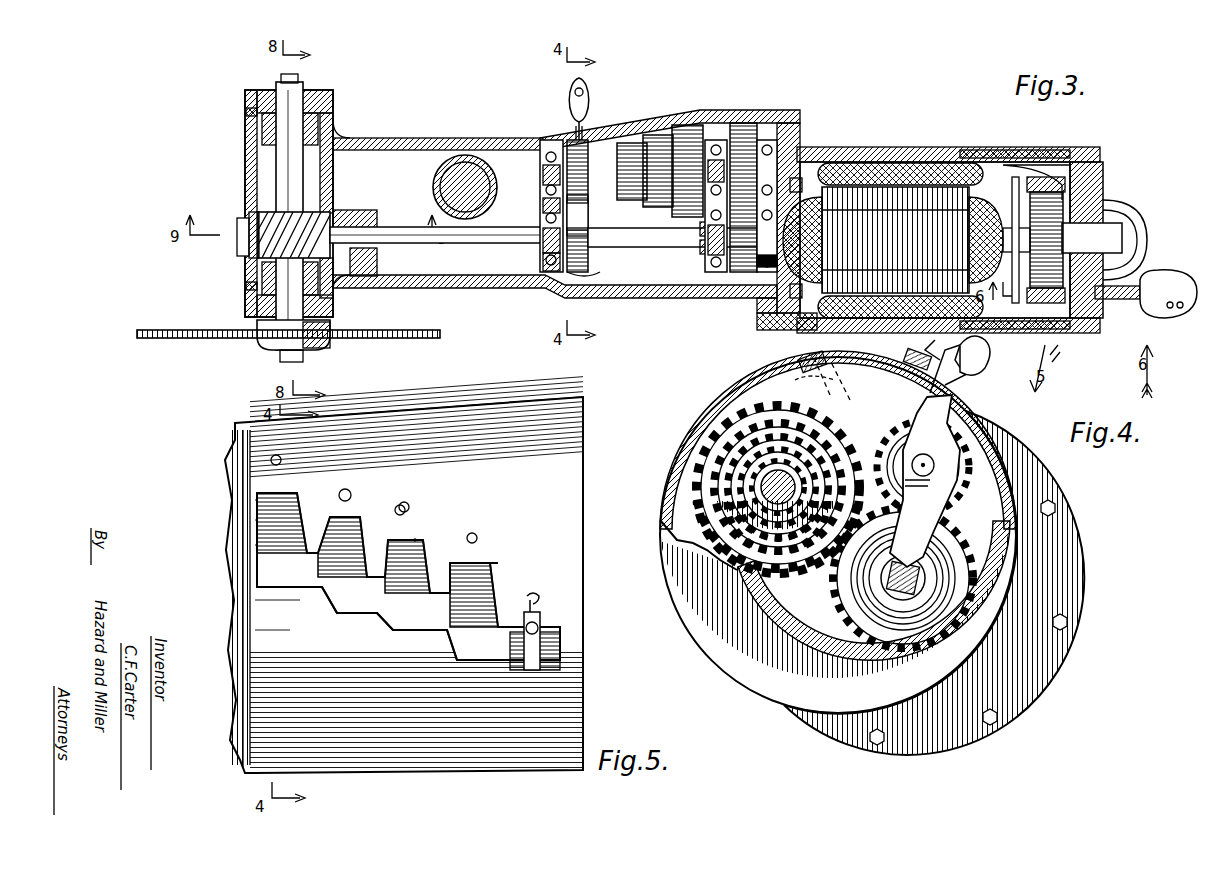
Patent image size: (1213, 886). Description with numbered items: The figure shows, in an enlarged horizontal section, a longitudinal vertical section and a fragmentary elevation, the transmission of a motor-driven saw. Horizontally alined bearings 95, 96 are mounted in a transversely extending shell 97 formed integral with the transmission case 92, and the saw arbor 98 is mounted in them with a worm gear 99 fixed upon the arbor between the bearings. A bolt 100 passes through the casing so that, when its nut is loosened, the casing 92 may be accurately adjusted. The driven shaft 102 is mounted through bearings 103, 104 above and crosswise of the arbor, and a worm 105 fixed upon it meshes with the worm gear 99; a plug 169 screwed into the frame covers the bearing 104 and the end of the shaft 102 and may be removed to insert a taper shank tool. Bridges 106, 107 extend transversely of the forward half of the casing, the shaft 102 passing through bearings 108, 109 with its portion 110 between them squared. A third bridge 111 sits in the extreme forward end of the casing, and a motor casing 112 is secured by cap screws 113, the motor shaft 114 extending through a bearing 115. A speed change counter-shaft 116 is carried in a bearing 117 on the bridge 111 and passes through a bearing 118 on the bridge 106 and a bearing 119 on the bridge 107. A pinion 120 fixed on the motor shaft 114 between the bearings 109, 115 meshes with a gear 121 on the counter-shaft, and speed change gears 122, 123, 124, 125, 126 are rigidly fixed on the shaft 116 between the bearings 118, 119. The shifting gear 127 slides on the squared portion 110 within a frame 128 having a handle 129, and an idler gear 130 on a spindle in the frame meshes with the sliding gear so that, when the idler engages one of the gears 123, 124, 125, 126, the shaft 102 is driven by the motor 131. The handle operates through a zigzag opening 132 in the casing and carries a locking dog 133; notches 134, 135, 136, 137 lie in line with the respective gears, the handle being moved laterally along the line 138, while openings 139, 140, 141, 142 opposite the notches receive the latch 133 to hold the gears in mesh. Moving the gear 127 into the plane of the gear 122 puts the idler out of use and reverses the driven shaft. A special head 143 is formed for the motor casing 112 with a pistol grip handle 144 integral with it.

In FIG. 3, the transmission case 92 is at (450, 140).
In FIG. 4, the transmission case 92 is at (1010, 420).
In FIG. 3, the bearing 95 is at (305, 95).
In FIG. 3, the bearing 96 is at (333, 310).
In FIG. 3, the shell 97 is at (246, 178).
In FIG. 3, the saw arbor 98 is at (278, 290).
In FIG. 3, the worm gear 99 is at (300, 215).
In FIG. 3, the bolt 100 is at (493, 178).
In FIG. 3, the driven shaft 102 is at (490, 225).
In FIG. 3, the bearing 103 is at (377, 219).
In FIG. 3, the bearing 104 is at (241, 218).
In FIG. 3, the worm 105 is at (343, 200).
In FIG. 3, the bridge 106 is at (700, 250).
In FIG. 3, the bridge 107 is at (585, 276).
In FIG. 3, the bearing 108 is at (545, 263).
In FIG. 3, the bearing 109 is at (700, 230).
In FIG. 3, the squared portion 110 is at (660, 228).
In FIG. 4, the squared portion 110 is at (910, 570).
In FIG. 3, the third bridge 111 is at (765, 275).
In FIG. 3, the motor casing 112 is at (878, 145).
In FIG. 4, the motor casing 112 is at (1070, 595).
In FIG. 3, the cap screws 113 is at (818, 118).
In FIG. 4, the cap screws 113 is at (790, 372).
In FIG. 3, the motor shaft 114 is at (1095, 235).
In FIG. 3, the bearing 115 is at (802, 290).
In FIG. 3, the speed change counter-shaft 116 is at (800, 168).
In FIG. 4, the speed change counter-shaft 116 is at (772, 490).
In FIG. 3, the bearing 117 is at (802, 185).
In FIG. 3, the bearing 118 is at (716, 145).
In FIG. 3, the bearing 119 is at (545, 140).
In FIG. 3, the pinion 120 is at (745, 268).
In FIG. 3, the gear 121 is at (745, 123).
In FIG. 3, the speed change gear 122 is at (688, 125).
In FIG. 4, the speed change gear 122 is at (755, 412).
In FIG. 3, the speed change gear 123 is at (658, 135).
In FIG. 4, the speed change gear 123 is at (760, 424).
In FIG. 5, the speed change gear 123 is at (480, 585).
In FIG. 3, the speed change gear 124 is at (632, 143).
In FIG. 4, the speed change gear 124 is at (768, 437).
In FIG. 5, the speed change gear 124 is at (415, 568).
In FIG. 3, the speed change gear 125 is at (580, 155).
In FIG. 4, the speed change gear 125 is at (770, 455).
In FIG. 5, the speed change gear 125 is at (352, 548).
In FIG. 3, the speed change gear 126 is at (583, 88).
In FIG. 4, the speed change gear 126 is at (775, 470).
In FIG. 5, the speed change gear 126 is at (290, 525).
In FIG. 3, the shifting gear 127 is at (588, 230).
In FIG. 4, the shifting gear 127 is at (865, 620).
In FIG. 3, the frame 128 is at (588, 205).
In FIG. 3, the handle 129 is at (566, 95).
In FIG. 4, the handle 129 is at (990, 355).
In FIG. 5, the handle 129 is at (536, 600).
In FIG. 3, the idler gear 130 is at (543, 200).
In FIG. 4, the idler gear 130 is at (958, 500).
In FIG. 3, the motor 131 is at (905, 165).
In FIG. 5, the zigzag opening 132 is at (310, 595).
In FIG. 4, the locking dog 133 is at (935, 385).
In FIG. 5, the locking dog 133 is at (540, 625).
In FIG. 5, the notch 134 is at (495, 575).
In FIG. 5, the notch 135 is at (415, 540).
In FIG. 5, the notch 136 is at (352, 518).
In FIG. 5, the notch 137 is at (257, 493).
In FIG. 5, the line 138 is at (367, 618).
In FIG. 5, the opening 139 is at (477, 536).
In FIG. 5, the opening 140 is at (409, 505).
In FIG. 5, the opening 141 is at (349, 489).
In FIG. 4, the opening 142 is at (820, 350).
In FIG. 5, the opening 142 is at (280, 456).
In FIG. 3, the special head 143 is at (1103, 178).
In FIG. 3, the pistol grip handle 144 is at (1175, 278).
In FIG. 3, the plug 169 is at (249, 252).